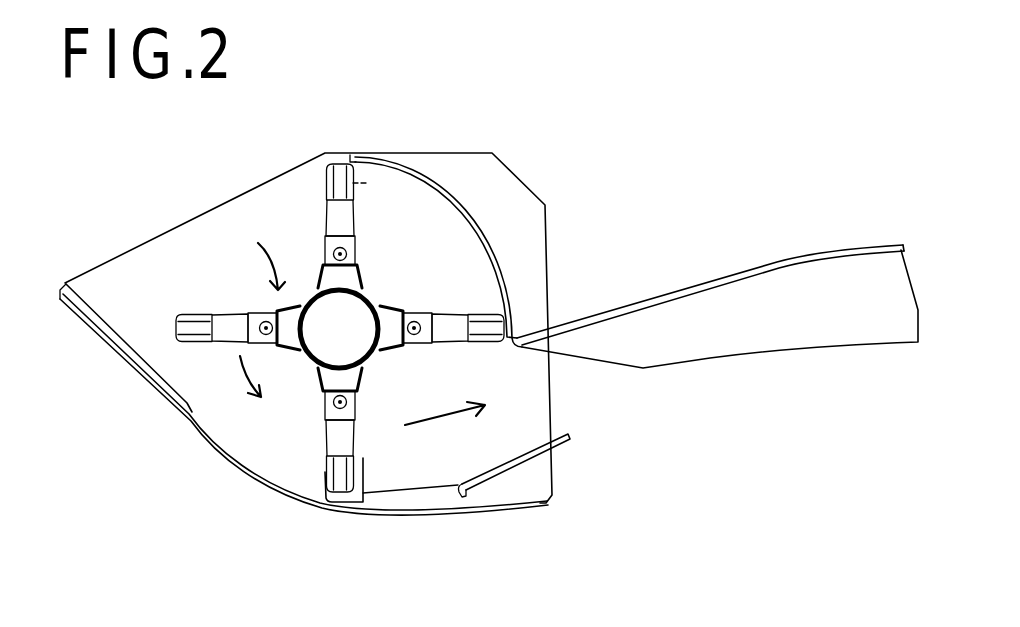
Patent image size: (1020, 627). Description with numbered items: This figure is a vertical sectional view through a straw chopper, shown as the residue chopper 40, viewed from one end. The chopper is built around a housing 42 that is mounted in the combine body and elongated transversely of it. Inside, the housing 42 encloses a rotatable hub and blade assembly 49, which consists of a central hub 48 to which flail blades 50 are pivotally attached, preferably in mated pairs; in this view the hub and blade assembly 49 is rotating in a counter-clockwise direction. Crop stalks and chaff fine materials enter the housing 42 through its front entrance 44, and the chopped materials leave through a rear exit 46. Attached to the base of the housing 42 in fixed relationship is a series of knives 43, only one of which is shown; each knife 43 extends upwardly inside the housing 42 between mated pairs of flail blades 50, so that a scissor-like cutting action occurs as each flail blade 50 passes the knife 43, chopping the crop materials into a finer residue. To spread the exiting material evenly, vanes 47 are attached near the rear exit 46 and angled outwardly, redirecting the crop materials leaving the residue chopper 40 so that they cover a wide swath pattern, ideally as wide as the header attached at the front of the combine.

The residue chopper 40 is at (204, 494).
The housing 42 is at (433, 153).
The knife 43 is at (352, 493).
The front entrance 44 is at (150, 237).
The rear exit 46 is at (553, 410).
The vanes 47 is at (688, 312).
The hub 48 is at (372, 298).
The hub and blade assembly 49 is at (254, 254).
The flail blades 50 is at (227, 318).